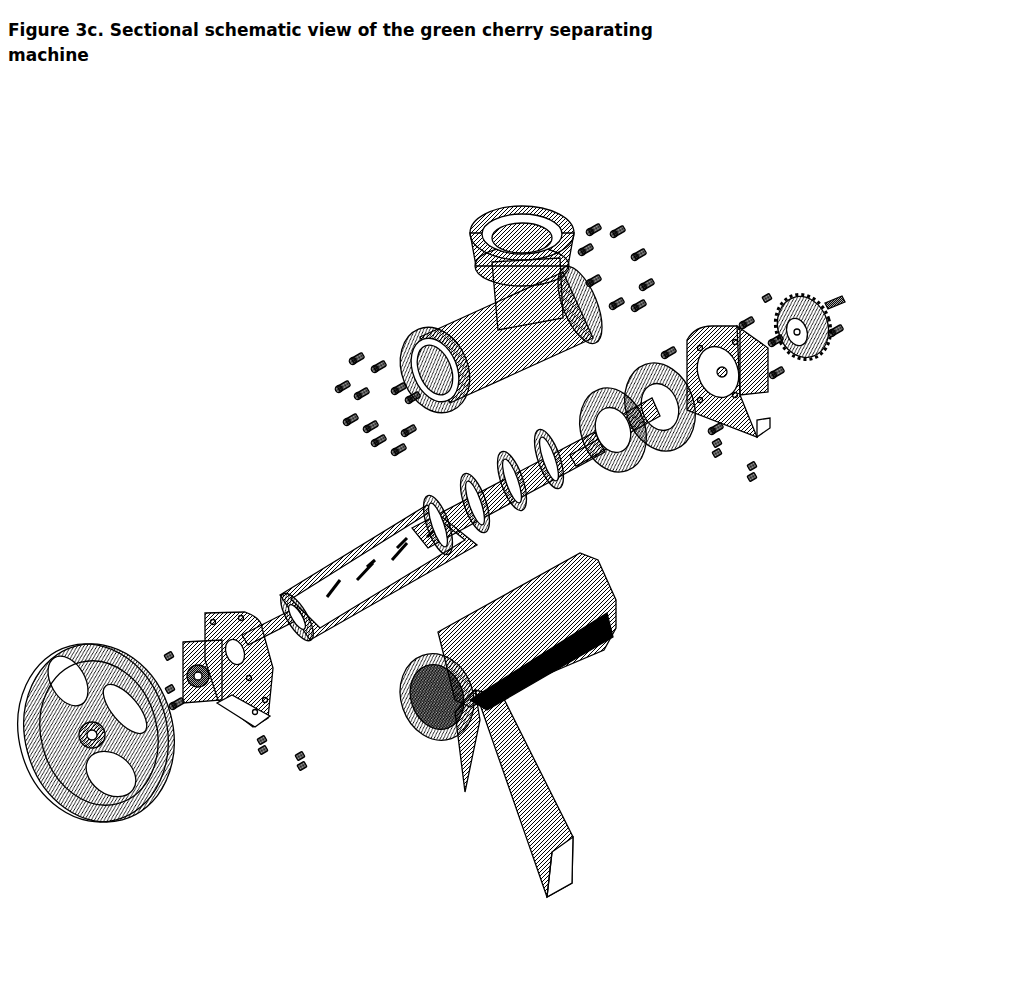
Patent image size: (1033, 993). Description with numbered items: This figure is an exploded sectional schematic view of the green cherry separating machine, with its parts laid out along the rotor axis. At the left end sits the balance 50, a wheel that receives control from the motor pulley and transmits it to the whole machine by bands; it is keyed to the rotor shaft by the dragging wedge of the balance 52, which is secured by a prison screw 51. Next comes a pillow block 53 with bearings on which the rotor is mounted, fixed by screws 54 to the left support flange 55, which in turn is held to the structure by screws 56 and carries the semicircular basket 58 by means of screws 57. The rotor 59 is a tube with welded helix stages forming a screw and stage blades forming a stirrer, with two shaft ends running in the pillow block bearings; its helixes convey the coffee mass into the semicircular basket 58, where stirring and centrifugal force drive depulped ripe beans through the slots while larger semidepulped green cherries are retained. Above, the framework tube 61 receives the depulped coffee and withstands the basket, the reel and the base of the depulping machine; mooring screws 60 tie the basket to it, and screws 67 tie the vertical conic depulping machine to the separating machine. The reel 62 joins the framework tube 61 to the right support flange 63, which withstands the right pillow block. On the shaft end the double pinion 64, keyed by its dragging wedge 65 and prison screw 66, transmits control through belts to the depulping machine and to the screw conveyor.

The balance 50 is at (82, 645).
The prison screw 51 is at (77, 797).
The dragging wedge of the balance 52 is at (142, 781).
The pillow block 53 is at (196, 700).
The screws mooring pillow blocks 54 is at (206, 705).
The left support flange 55 is at (257, 728).
The screws mooring flange to the structure 56 is at (265, 752).
The screws mooring semicircular basket to flange 57 is at (277, 677).
The semicircular basket 58 is at (448, 745).
The rotor 59 is at (552, 496).
The mooring screws of the semicircular basket to the framework tube 60 is at (352, 357).
The framework tube 61 is at (483, 298).
The reel 62 is at (668, 448).
The right support flange 63 is at (768, 435).
The double pinion 64 is at (840, 327).
The dragging wedge of double pinion 65 is at (833, 298).
The prison screw 66 is at (764, 296).
The screws tying up vertical conic depulping machine 67 is at (549, 225).